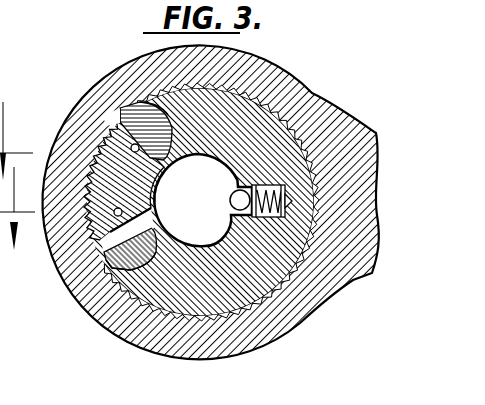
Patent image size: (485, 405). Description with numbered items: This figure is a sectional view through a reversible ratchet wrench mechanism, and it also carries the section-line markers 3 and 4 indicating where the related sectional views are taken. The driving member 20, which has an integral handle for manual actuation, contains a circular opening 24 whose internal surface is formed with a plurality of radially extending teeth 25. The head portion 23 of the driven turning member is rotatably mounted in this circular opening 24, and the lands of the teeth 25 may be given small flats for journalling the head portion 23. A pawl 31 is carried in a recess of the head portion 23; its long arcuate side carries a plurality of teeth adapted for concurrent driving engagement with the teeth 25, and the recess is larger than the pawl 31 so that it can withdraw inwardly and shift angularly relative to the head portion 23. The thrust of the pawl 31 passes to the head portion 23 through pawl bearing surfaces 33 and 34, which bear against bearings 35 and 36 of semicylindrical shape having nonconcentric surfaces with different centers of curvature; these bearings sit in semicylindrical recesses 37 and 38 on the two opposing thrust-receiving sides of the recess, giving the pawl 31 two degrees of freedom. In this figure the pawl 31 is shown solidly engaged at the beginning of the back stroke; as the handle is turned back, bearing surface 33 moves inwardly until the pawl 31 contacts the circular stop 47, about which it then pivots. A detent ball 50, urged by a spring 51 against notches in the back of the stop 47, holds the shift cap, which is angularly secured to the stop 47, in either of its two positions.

The driving member 20 is at (270, 67).
The head portion 23 is at (275, 132).
The circular opening 24 is at (195, 313).
The teeth 25 is at (256, 300).
The pawl 31 is at (122, 194).
The pawl bearing surface 33 is at (133, 128).
The pawl bearing surface 34 is at (80, 270).
The bearing 35 is at (133, 120).
The bearing 36 is at (107, 297).
The semicylindrical recess 37 is at (147, 115).
The semicylindrical recess 38 is at (130, 268).
The circular stop 47 is at (207, 160).
The detent ball 50 is at (243, 212).
The spring 51 is at (273, 217).
The section line 3 is at (17, 208).
The section line 4 is at (16, 141).